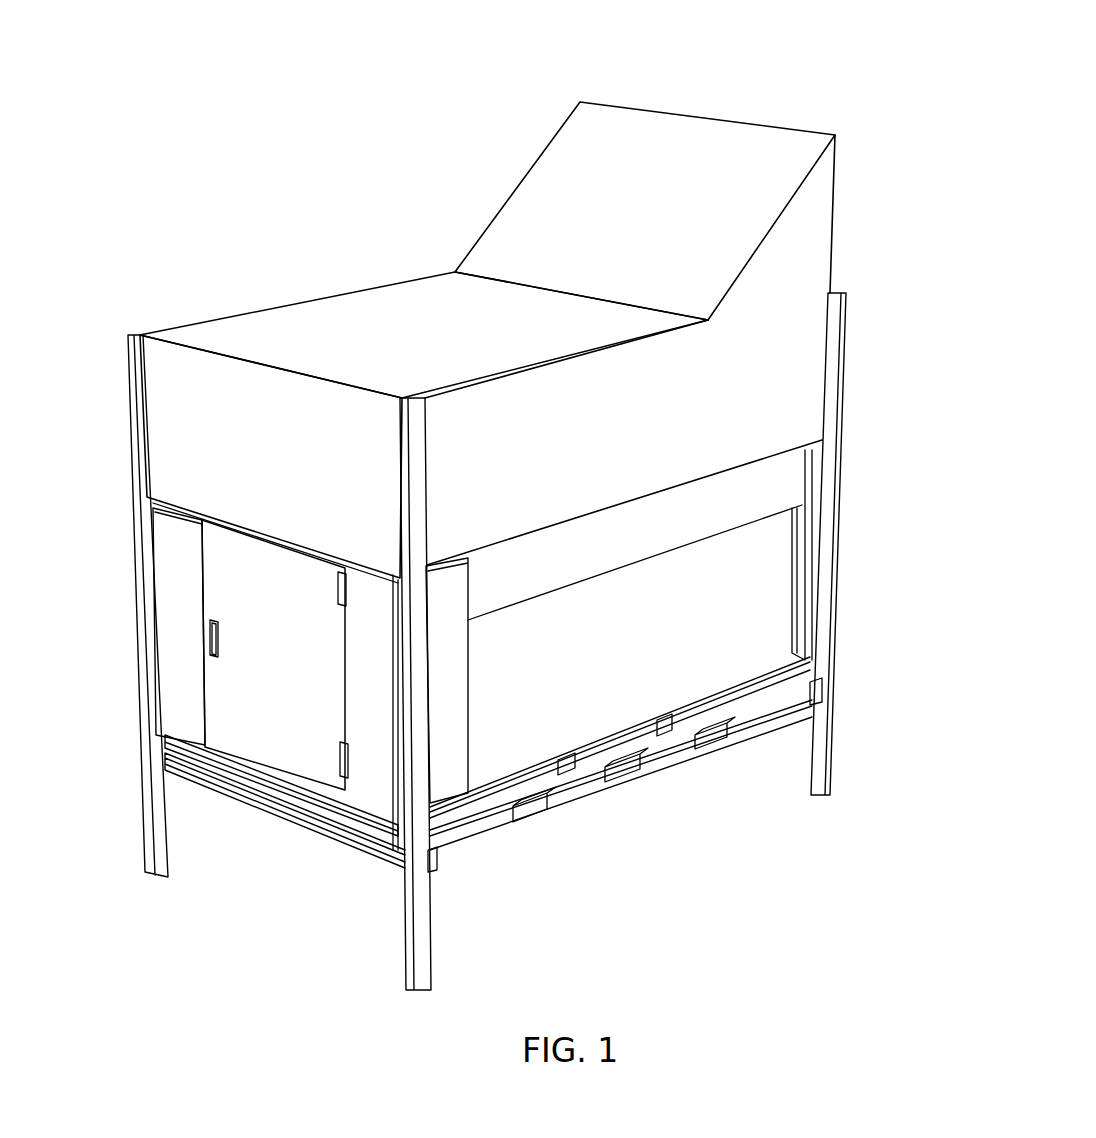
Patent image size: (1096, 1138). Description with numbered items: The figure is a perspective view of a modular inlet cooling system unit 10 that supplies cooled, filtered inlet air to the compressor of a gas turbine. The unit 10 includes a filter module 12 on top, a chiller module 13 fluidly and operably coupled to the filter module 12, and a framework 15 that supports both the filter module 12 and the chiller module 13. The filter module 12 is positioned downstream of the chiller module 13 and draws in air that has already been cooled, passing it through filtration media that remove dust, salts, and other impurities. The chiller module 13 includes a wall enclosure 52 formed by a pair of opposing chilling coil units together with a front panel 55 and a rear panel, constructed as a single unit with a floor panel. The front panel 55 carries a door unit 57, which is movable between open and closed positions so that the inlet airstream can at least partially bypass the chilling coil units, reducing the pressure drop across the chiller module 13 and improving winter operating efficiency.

The inlet cooling system unit 10 is at (810, 98).
The filter module 12 is at (220, 273).
The chiller module 13 is at (650, 677).
The framework 15 is at (120, 561).
The wall enclosure 52 is at (266, 745).
The front panel 55 is at (370, 790).
The door unit 57 is at (228, 688).